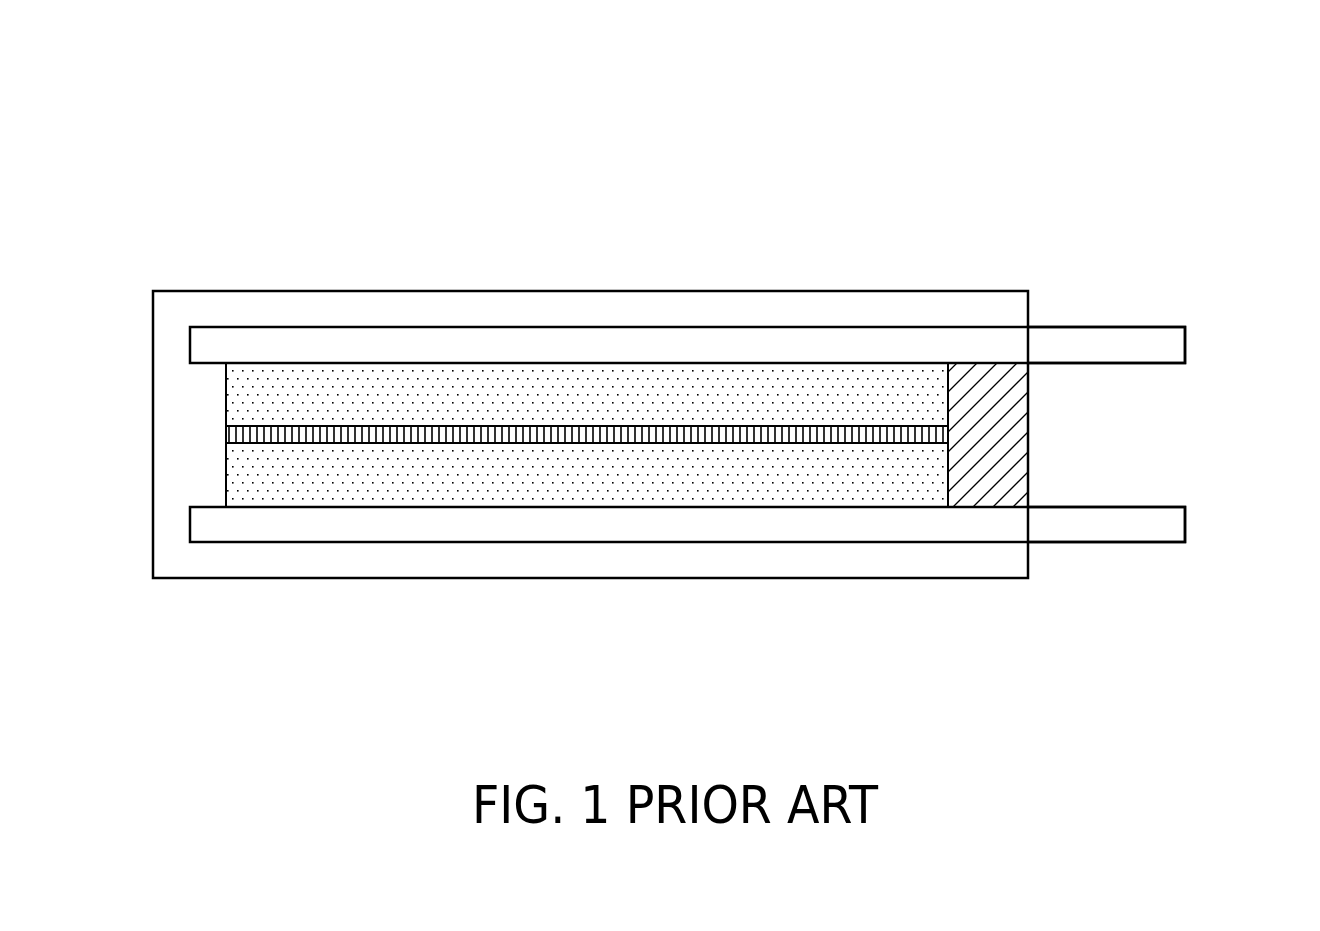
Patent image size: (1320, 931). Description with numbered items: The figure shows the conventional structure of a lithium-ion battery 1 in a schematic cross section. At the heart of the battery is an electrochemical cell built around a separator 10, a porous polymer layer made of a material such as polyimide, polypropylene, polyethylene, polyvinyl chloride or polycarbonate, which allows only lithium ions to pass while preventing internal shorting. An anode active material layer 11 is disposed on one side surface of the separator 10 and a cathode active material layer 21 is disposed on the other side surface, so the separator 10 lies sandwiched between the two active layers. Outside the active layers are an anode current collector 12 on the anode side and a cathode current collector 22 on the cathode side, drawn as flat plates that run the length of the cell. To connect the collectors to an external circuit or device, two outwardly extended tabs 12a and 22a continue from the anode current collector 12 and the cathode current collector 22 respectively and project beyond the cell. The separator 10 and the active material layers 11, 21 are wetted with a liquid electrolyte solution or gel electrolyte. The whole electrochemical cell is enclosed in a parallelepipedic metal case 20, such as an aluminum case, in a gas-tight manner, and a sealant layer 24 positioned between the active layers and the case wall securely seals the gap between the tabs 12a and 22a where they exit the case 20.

The lithium-ion battery 1 is at (1186, 140).
The separator 10 is at (318, 433).
The anode active material layer 11 is at (442, 393).
The anode current collector 12 is at (540, 342).
The tab 12a is at (1107, 345).
The metal case 20 is at (687, 312).
The cathode active material layer 21 is at (442, 477).
The cathode current collector 22 is at (540, 528).
The tab 22a is at (1107, 526).
The sealant layer 24 is at (990, 442).